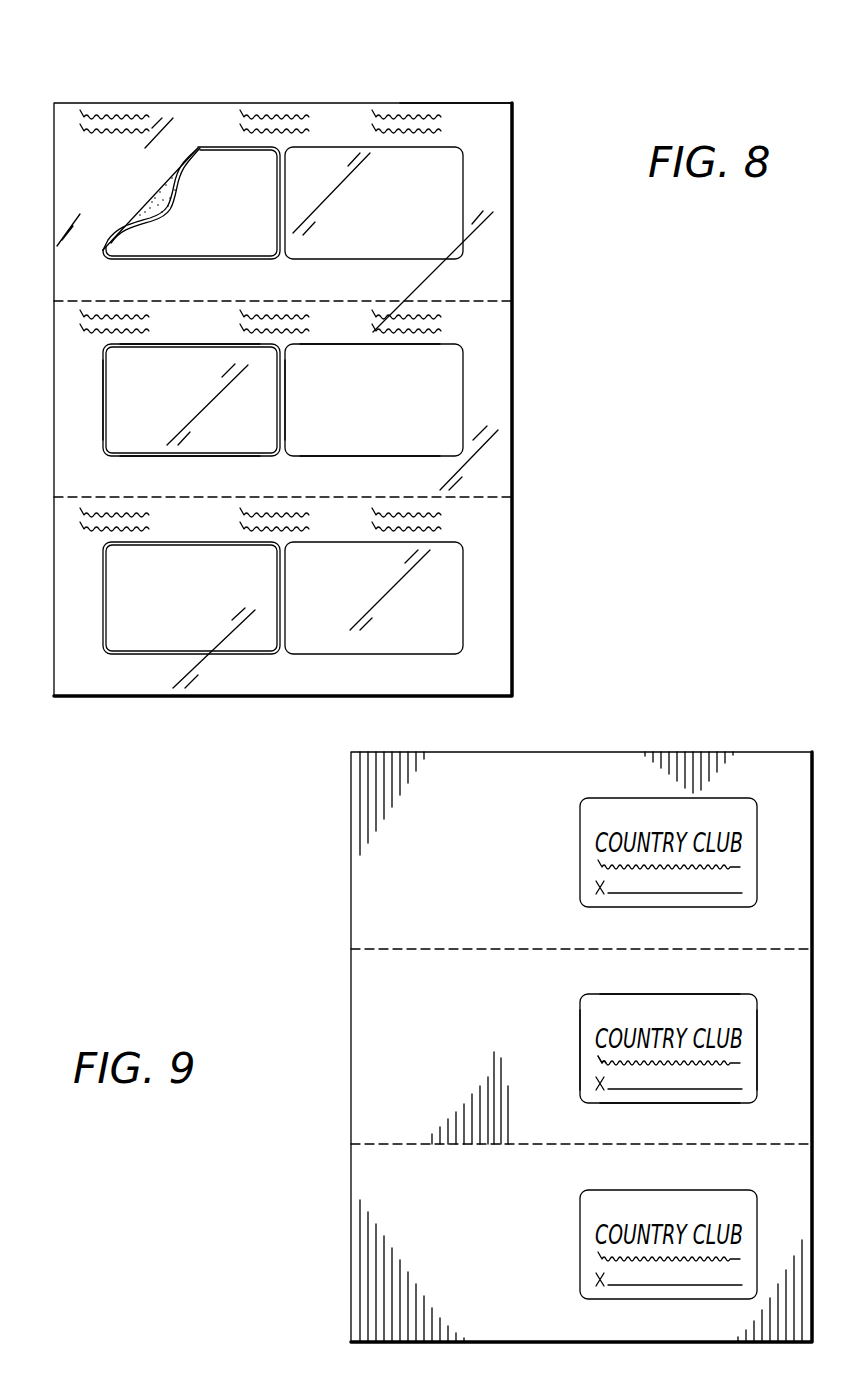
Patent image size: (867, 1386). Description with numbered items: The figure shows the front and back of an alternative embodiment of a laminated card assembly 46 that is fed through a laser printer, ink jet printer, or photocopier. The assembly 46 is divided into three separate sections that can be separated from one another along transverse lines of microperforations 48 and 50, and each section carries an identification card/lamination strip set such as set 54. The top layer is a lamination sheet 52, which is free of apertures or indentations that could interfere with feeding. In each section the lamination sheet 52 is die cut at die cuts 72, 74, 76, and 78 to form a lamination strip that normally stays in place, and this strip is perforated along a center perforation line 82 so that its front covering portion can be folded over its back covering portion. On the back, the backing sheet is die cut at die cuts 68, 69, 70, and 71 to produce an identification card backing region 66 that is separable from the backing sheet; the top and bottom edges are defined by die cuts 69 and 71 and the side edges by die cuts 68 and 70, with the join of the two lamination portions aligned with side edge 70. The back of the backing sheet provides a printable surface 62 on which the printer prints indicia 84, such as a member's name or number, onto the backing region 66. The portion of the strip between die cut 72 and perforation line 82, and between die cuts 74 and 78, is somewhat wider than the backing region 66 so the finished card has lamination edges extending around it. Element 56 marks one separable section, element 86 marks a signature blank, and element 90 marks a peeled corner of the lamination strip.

In FIG. 8, the laminated card assembly 46 is at (313, 86).
In FIG. 9, the laminated card assembly 46 is at (734, 742).
In FIG. 8, the transverse line of microperforations 48 is at (498, 299).
In FIG. 9, the transverse line of microperforations 48 is at (456, 949).
In FIG. 8, the transverse line of microperforations 50 is at (498, 495).
In FIG. 9, the transverse line of microperforations 50 is at (432, 1144).
In FIG. 8, the lamination sheet 52 is at (493, 129).
In FIG. 8, the identification card/lamination strip set 54 is at (487, 236).
In FIG. 8, the sheet section 56 is at (530, 325).
In FIG. 9, the sheet section 56 is at (345, 1097).
In FIG. 9, the printable surface 62 is at (368, 1027).
In FIG. 8, the identification card backing region 66 is at (108, 450).
In FIG. 9, the identification card backing region 66 is at (599, 974).
In FIG. 8, the die cut 68 is at (33, 446).
In FIG. 9, the die cut 68 is at (757, 1016).
In FIG. 9, the die cut 69 is at (658, 994).
In FIG. 8, the die cut 70 is at (280, 417).
In FIG. 9, the die cut 70 is at (580, 1083).
In FIG. 9, the die cut 71 is at (664, 1103).
In FIG. 8, the die cut 72 is at (53, 409).
In FIG. 8, the die cut 74 is at (184, 344).
In FIG. 8, the die cut 76 is at (463, 378).
In FIG. 8, the die cut 78 is at (192, 458).
In FIG. 8, the perforation line 82 is at (285, 396).
In FIG. 9, the indicia 84 is at (597, 1039).
In FIG. 9, the printed signature line 86 is at (587, 1075).
In FIG. 8, the peeled corner 90 is at (131, 183).